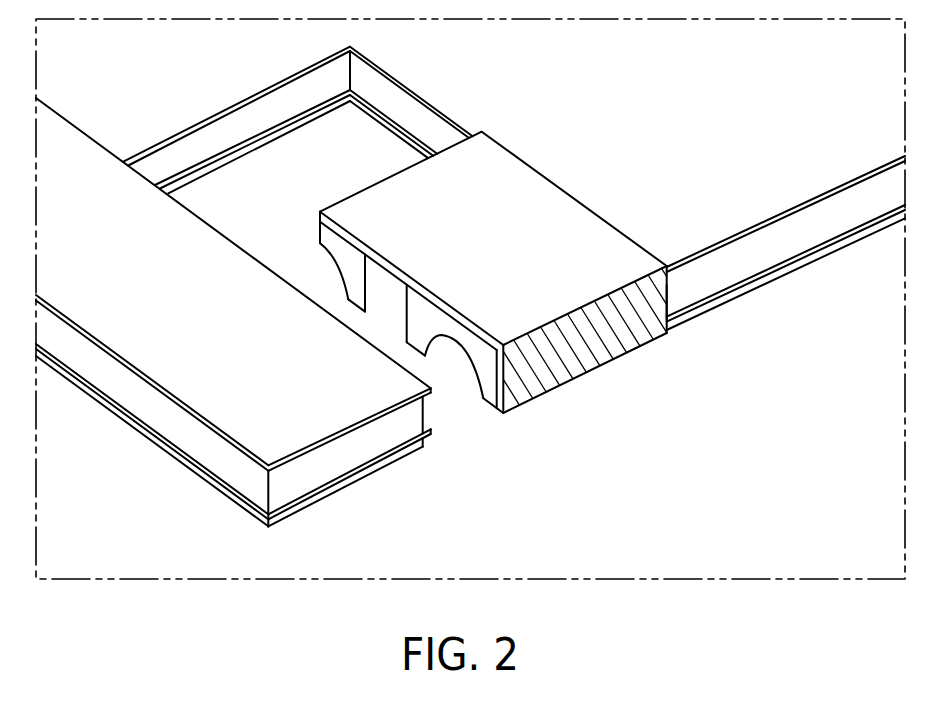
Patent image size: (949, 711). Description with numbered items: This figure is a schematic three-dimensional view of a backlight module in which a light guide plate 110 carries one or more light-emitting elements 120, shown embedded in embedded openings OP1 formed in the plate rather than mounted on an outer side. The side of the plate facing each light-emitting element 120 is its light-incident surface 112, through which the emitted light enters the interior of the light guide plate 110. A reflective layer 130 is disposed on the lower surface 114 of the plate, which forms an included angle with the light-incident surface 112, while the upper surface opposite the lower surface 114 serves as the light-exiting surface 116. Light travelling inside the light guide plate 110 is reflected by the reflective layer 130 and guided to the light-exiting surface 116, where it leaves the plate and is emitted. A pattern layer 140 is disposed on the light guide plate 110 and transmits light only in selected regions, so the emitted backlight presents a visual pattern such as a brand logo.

The light guide plate 110 is at (514, 213).
The light-incident surface 112 is at (666, 300).
The lower surface 114 is at (828, 241).
The light-exiting surface 116 is at (824, 194).
The light-emitting element 120 is at (568, 372).
The reflective layer 130 is at (786, 292).
The pattern layer 140 is at (786, 206).
The embedded opening OP1 is at (277, 186).